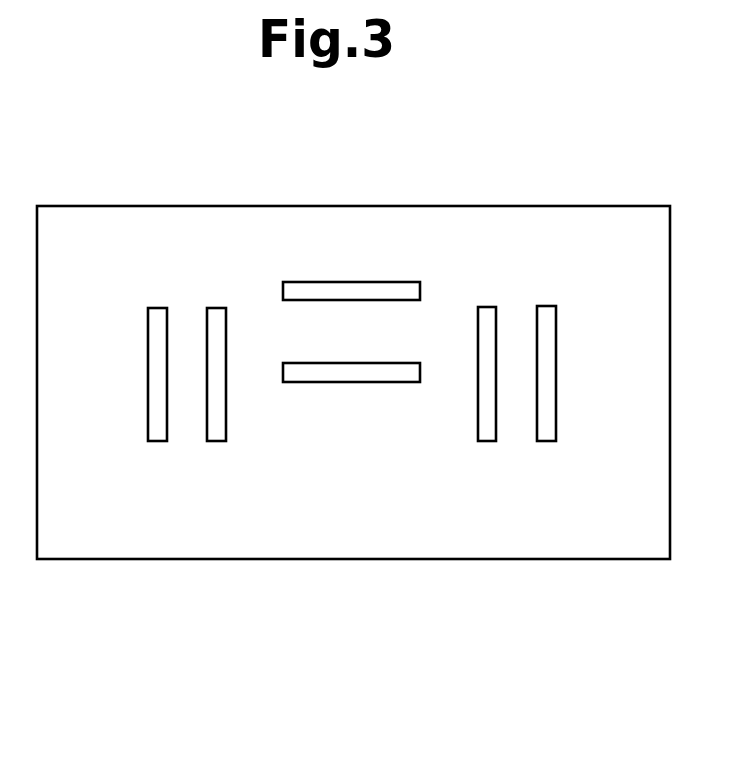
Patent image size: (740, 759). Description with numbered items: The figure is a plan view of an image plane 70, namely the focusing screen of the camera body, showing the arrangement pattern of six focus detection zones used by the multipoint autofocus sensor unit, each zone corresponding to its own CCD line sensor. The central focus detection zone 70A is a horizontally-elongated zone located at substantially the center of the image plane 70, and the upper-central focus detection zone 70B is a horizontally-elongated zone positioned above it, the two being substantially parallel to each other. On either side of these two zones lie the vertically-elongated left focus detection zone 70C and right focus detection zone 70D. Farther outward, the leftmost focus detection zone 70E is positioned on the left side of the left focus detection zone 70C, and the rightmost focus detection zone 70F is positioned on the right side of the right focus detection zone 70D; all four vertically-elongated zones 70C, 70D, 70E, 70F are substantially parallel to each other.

The image plane 70 is at (341, 225).
The central focus detection zone 70A is at (320, 372).
The upper-central focus detection zone 70B is at (382, 288).
The left focus detection zone 70C is at (215, 322).
The right focus detection zone 70D is at (485, 320).
The leftmost focus detection zone 70E is at (155, 325).
The rightmost focus detection zone 70F is at (545, 318).